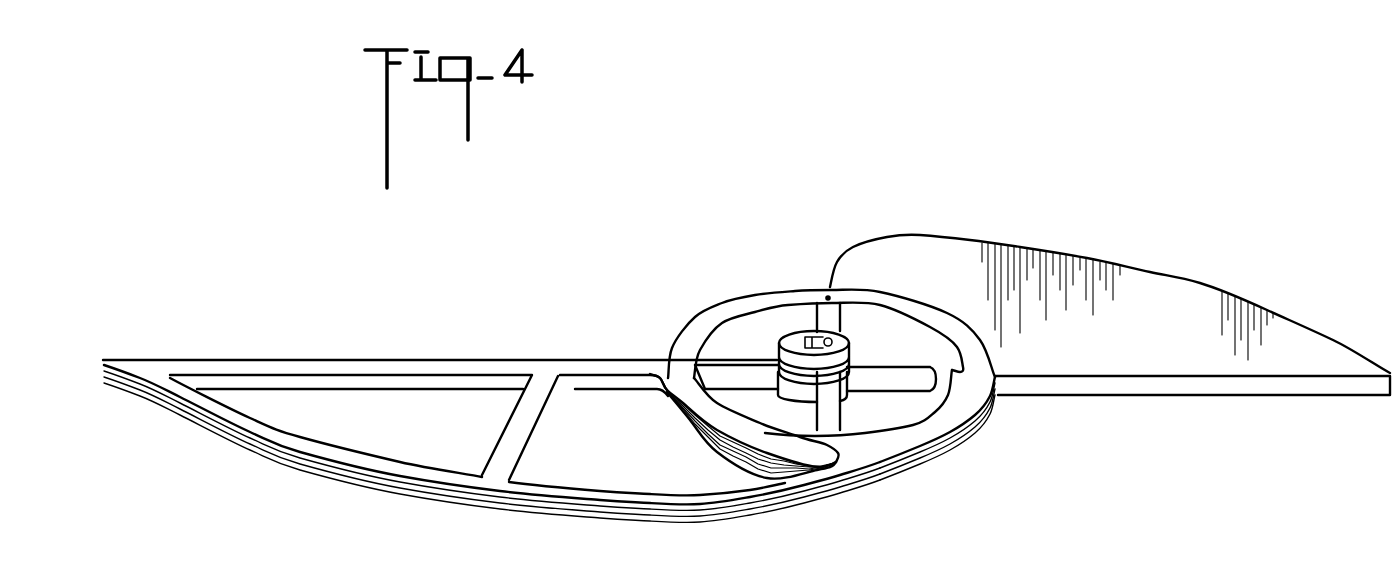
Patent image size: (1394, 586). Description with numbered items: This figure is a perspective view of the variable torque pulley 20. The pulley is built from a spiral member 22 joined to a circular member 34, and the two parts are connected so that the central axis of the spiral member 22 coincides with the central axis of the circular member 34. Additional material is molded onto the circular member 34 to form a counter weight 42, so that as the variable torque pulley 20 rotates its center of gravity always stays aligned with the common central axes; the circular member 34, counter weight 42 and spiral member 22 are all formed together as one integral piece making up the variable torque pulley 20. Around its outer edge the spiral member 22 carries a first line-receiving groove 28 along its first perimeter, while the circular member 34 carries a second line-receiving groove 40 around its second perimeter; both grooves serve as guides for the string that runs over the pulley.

The variable torque pulley 20 is at (658, 231).
The spiral member 22 is at (549, 449).
The first line-receiving groove 28 is at (218, 426).
The circular member 34 is at (792, 297).
The second line-receiving groove 40 is at (940, 440).
The counter weight 42 is at (1150, 290).